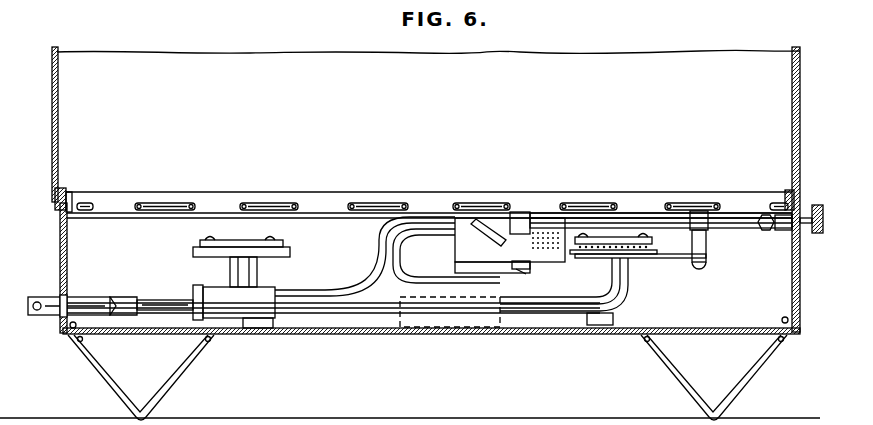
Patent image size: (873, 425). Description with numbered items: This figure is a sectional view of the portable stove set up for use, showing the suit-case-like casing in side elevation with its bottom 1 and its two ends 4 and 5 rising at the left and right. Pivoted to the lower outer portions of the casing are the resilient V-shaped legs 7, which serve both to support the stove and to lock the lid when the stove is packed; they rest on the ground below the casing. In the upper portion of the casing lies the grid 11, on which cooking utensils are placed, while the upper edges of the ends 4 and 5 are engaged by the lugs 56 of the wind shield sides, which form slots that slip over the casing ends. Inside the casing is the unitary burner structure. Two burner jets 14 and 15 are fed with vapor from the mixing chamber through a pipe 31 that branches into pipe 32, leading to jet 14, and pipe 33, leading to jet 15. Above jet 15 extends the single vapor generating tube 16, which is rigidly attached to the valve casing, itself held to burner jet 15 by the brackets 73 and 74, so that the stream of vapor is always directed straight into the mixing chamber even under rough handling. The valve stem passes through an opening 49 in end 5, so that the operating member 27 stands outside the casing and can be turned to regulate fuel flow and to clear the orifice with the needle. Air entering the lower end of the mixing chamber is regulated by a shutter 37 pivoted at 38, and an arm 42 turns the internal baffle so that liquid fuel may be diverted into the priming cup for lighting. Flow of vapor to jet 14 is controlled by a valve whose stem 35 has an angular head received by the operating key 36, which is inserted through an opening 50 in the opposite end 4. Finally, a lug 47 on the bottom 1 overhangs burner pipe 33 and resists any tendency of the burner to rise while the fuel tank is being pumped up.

The bottom 1 is at (348, 333).
The end 4 is at (60, 224).
The end 5 is at (800, 295).
The V-shaped legs 7 is at (165, 395).
The grid 11 is at (297, 203).
The burner jet 14 is at (197, 246).
The burner jet 15 is at (632, 257).
The vapor generating tube 16 is at (622, 219).
The operating member 27 is at (818, 205).
The pipe 31 is at (364, 249).
The pipe 32 is at (306, 312).
The pipe 33 is at (531, 312).
The valve stem 35 is at (178, 301).
The operating key 36 is at (110, 300).
The shutter 37 is at (455, 272).
The pivot 38 is at (522, 276).
The arm 42 is at (483, 222).
The lug 47 is at (455, 323).
The opening 49 is at (802, 235).
The opening 50 is at (60, 292).
The lugs 56 is at (68, 192).
The bracket 73 is at (640, 263).
The bracket 74 is at (707, 248).